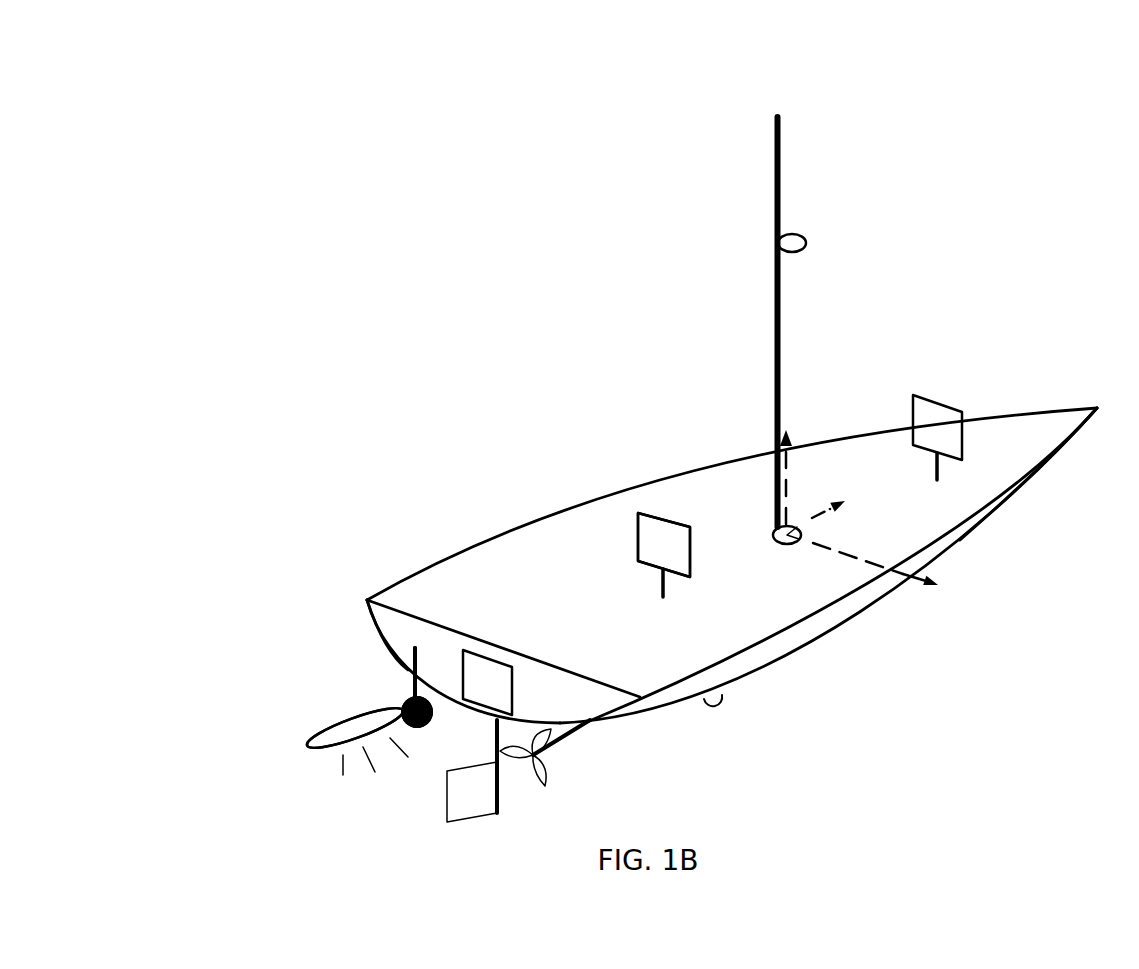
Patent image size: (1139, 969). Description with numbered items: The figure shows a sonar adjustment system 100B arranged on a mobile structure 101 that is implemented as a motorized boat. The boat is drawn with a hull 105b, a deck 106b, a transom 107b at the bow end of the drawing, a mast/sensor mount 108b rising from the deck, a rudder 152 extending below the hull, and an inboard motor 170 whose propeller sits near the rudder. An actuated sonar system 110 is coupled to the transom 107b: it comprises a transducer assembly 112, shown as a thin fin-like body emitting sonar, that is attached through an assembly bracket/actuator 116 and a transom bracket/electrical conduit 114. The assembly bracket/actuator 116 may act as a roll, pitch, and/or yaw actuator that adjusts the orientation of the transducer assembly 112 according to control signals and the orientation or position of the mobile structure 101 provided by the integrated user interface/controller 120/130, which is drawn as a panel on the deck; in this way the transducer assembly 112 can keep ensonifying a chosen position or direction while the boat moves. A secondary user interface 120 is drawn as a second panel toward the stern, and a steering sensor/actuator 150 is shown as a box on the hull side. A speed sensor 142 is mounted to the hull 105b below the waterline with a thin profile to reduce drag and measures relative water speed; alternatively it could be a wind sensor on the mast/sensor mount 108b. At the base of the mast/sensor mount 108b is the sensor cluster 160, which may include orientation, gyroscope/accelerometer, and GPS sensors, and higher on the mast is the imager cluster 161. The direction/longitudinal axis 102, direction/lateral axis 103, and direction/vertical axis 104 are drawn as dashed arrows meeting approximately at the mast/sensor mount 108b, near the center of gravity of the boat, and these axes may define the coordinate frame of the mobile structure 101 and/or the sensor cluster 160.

The system 100B is at (134, 112).
The mobile structure 101 is at (393, 561).
The direction/longitudinal axis 102 is at (817, 520).
The direction/lateral axis 103 is at (877, 567).
The direction/vertical axis 104 is at (790, 463).
The hull 105b is at (838, 625).
The deck 106b is at (1003, 467).
The transom 107b is at (398, 633).
The mast/sensor mount 108b is at (775, 156).
The sonar system 110 is at (276, 666).
The transducer assembly 112 is at (317, 738).
The transom bracket/electrical conduit 114 is at (408, 668).
The assembly bracket/actuator 116 is at (403, 703).
The secondary user interface 120 is at (913, 425).
The controller 130 is at (664, 545).
The speed sensor 142 is at (723, 700).
The steering sensor/actuator 150 is at (474, 693).
The rudder 152 is at (483, 800).
The sensor cluster 160 is at (800, 532).
The imager cluster 161 is at (806, 242).
The inboard motor 170 is at (584, 755).